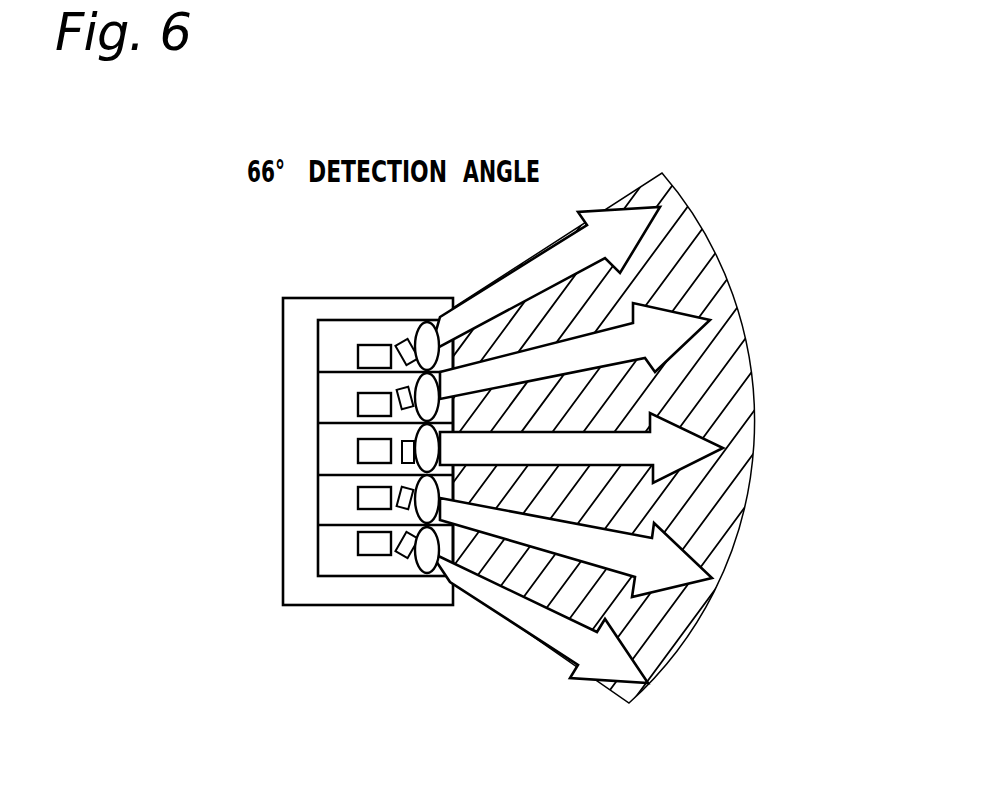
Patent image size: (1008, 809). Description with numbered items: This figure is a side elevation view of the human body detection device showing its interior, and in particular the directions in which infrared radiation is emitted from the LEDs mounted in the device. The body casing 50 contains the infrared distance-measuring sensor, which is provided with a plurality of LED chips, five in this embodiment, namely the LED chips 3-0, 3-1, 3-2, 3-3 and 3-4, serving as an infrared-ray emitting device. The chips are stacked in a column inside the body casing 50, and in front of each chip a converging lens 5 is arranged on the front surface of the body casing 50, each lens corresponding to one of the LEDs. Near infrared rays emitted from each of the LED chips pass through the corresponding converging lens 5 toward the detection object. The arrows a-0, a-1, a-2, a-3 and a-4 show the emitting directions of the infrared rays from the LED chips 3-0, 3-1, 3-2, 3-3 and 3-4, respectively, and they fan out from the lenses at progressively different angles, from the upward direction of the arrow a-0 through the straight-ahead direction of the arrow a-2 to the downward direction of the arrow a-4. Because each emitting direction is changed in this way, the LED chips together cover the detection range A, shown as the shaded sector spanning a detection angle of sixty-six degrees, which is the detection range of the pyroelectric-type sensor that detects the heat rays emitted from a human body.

The body casing 50 is at (392, 297).
The converging lens 5 is at (432, 346).
The LED chip 3-0 is at (358, 357).
The LED chip 3-1 is at (358, 402).
The LED chip 3-2 is at (358, 451).
The LED chip 3-3 is at (358, 495).
The LED chip 3-4 is at (358, 543).
The arrow a-0 is at (635, 223).
The arrow a-1 is at (673, 330).
The arrow a-2 is at (685, 443).
The arrow a-3 is at (673, 556).
The arrow a-4 is at (640, 657).
The detection range A is at (685, 258).